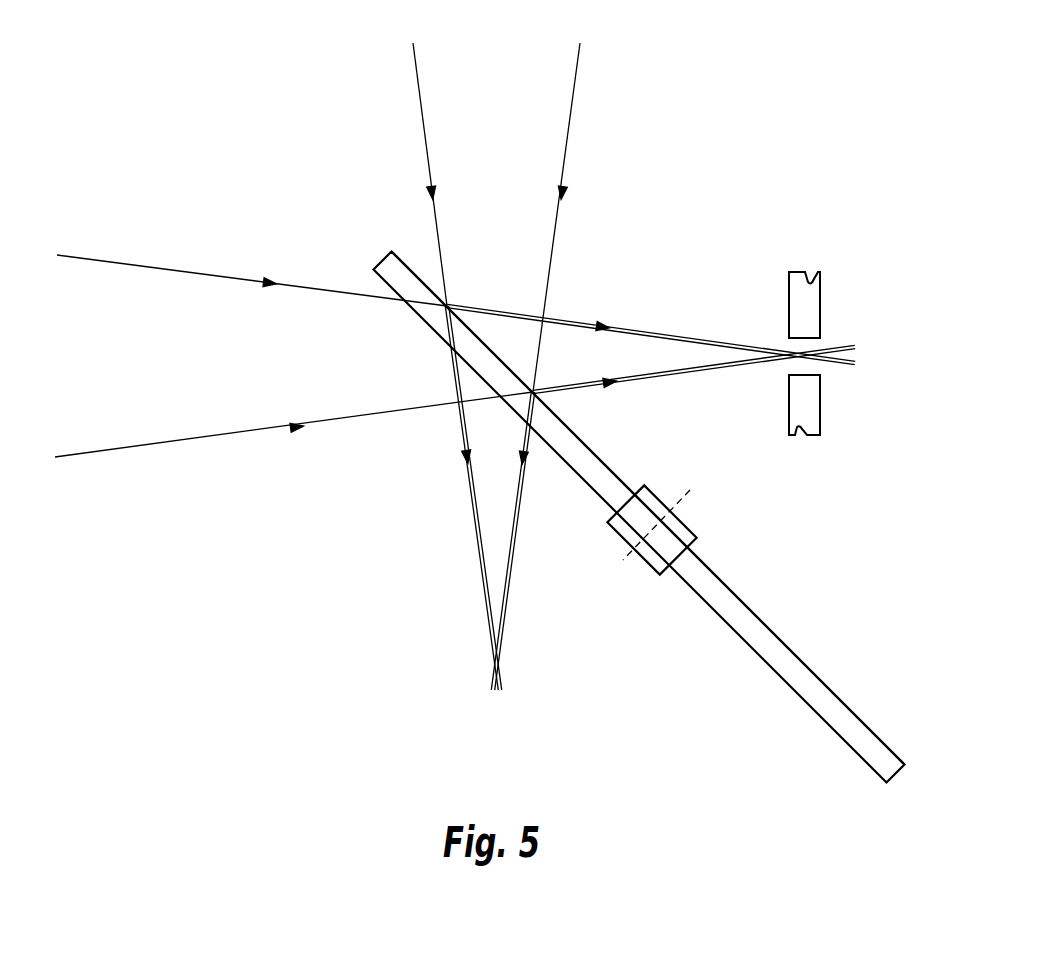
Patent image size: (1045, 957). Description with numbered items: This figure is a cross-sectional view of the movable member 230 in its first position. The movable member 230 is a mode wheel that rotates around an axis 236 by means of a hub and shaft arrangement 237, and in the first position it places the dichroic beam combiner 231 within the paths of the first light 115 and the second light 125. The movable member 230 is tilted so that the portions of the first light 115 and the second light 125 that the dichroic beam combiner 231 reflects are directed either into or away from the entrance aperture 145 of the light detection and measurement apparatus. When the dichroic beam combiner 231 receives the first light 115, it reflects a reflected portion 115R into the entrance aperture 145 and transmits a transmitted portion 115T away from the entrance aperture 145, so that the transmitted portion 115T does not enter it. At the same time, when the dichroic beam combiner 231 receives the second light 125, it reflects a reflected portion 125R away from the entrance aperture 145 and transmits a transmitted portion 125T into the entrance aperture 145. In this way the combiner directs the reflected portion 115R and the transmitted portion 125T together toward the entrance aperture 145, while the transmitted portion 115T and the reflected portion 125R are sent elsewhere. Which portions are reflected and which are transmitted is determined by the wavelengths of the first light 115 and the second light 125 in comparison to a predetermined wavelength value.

The first light 115 is at (570, 115).
The second light 125 is at (150, 443).
The reflected portion of the first light 115R is at (573, 325).
The transmitted portion of the second light 125T is at (668, 373).
The reflected portion of the second light 125R is at (517, 572).
The transmitted portion of the first light 115T is at (475, 490).
The movable member 230 is at (862, 747).
The dichroic beam combiner 231 is at (388, 262).
The axis 236 is at (675, 500).
The hub and shaft arrangement 237 is at (697, 538).
The entrance aperture 145 is at (815, 366).